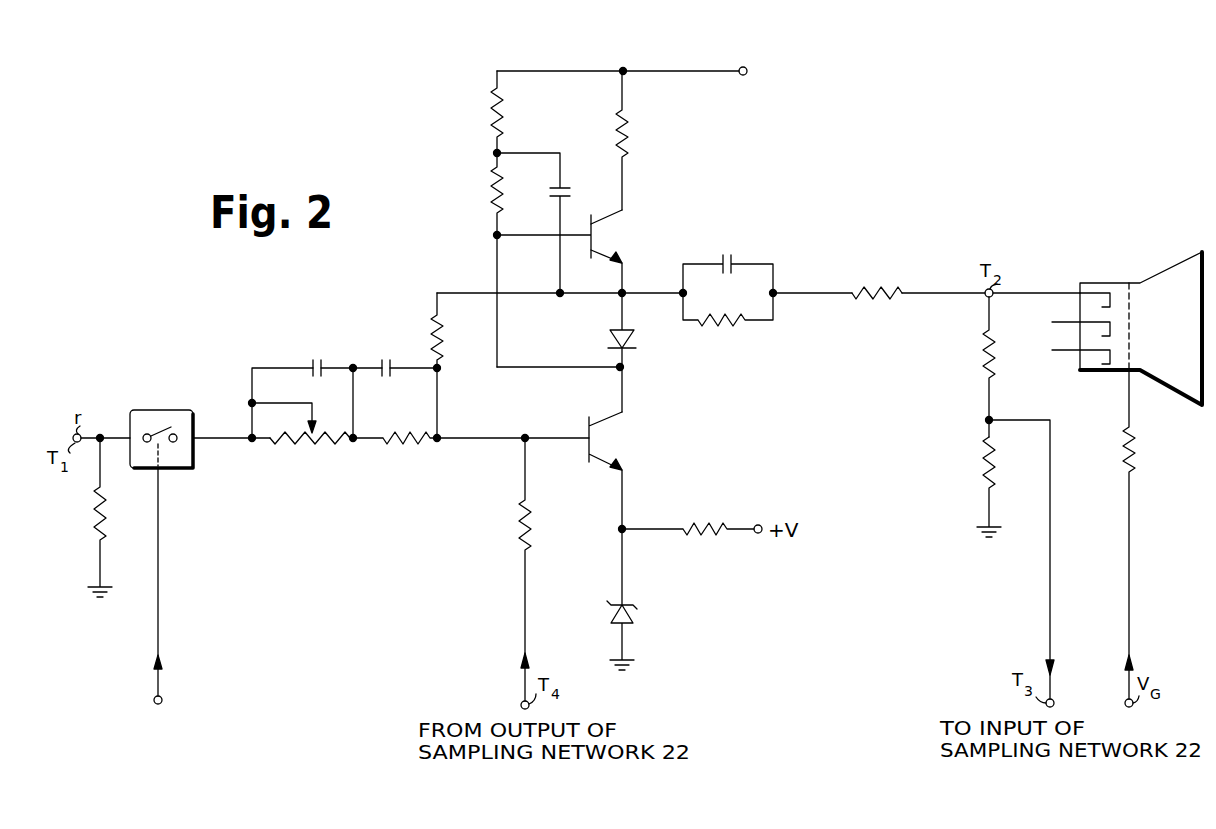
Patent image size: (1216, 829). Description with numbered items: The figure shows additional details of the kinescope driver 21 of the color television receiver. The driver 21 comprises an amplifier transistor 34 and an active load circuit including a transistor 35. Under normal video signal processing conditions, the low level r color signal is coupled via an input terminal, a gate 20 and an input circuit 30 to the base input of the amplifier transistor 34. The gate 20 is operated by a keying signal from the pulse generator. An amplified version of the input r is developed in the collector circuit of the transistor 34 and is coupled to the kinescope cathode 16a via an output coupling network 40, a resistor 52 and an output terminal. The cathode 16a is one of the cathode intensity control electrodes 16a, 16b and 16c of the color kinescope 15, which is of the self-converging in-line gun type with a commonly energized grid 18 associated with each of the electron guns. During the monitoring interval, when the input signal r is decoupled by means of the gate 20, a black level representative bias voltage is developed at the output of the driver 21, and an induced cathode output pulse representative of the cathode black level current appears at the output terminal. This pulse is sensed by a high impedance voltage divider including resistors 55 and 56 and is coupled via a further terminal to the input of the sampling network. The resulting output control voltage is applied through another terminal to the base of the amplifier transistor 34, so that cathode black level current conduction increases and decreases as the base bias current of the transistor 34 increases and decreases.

The color kinescope 15 is at (1177, 266).
The cathode intensity control electrode 16a is at (1100, 290).
The cathode intensity control electrode 16b is at (1054, 324).
The cathode intensity control electrode 16c is at (1054, 352).
The commonly energized grid 18 is at (1131, 372).
The gate 20 is at (194, 461).
The kinescope driver 21 is at (813, 52).
The input circuit 30 is at (245, 327).
The amplifier transistor 34 is at (629, 450).
The transistor 35 is at (629, 248).
The output coupling network 40 is at (740, 305).
The resistor 52 is at (875, 291).
The resistor 55 is at (984, 356).
The resistor 56 is at (993, 460).